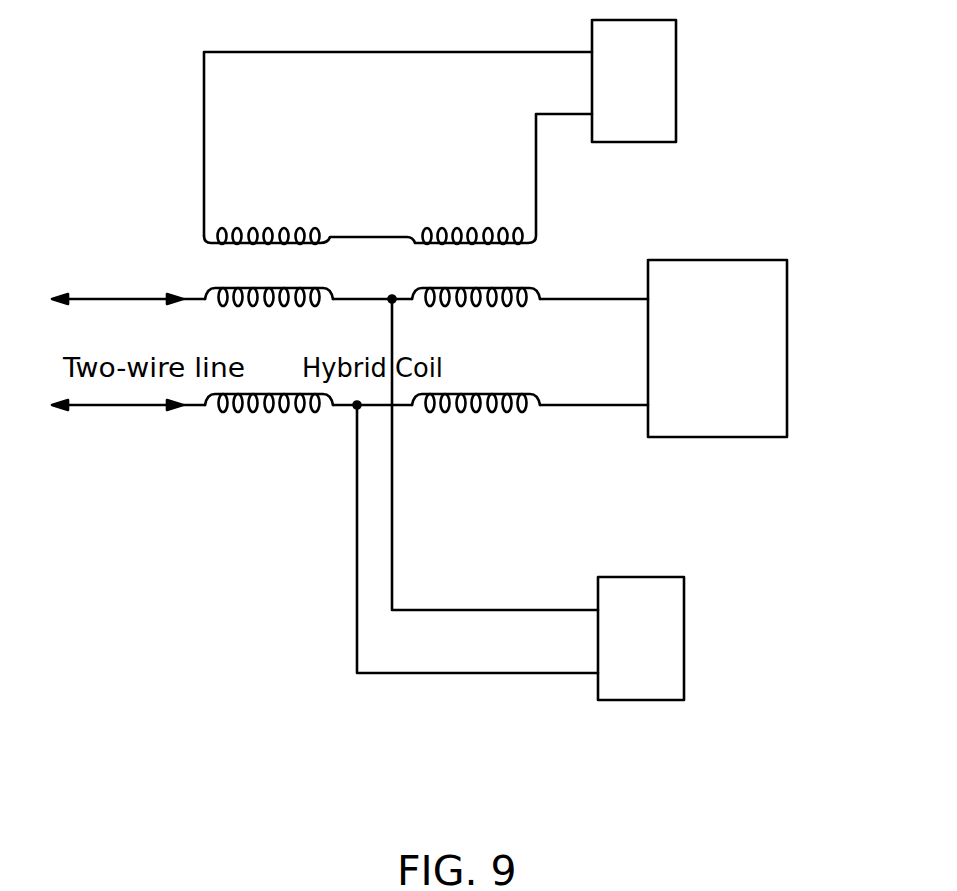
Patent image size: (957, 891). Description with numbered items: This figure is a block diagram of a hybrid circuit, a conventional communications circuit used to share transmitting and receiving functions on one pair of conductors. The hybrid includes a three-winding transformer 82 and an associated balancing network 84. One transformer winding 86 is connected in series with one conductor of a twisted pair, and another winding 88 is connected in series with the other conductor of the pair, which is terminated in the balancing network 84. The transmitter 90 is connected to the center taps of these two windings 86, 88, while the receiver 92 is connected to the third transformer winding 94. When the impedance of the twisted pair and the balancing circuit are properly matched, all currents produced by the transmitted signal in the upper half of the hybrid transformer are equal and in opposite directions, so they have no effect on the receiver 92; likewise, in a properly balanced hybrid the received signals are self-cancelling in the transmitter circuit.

The three-winding transformer 82 is at (552, 258).
The balancing network 84 is at (768, 348).
The transformer winding 86 is at (530, 324).
The transformer winding 88 is at (530, 432).
The transmitter 90 is at (688, 638).
The receiver 92 is at (682, 81).
The third transformer winding 94 is at (398, 148).